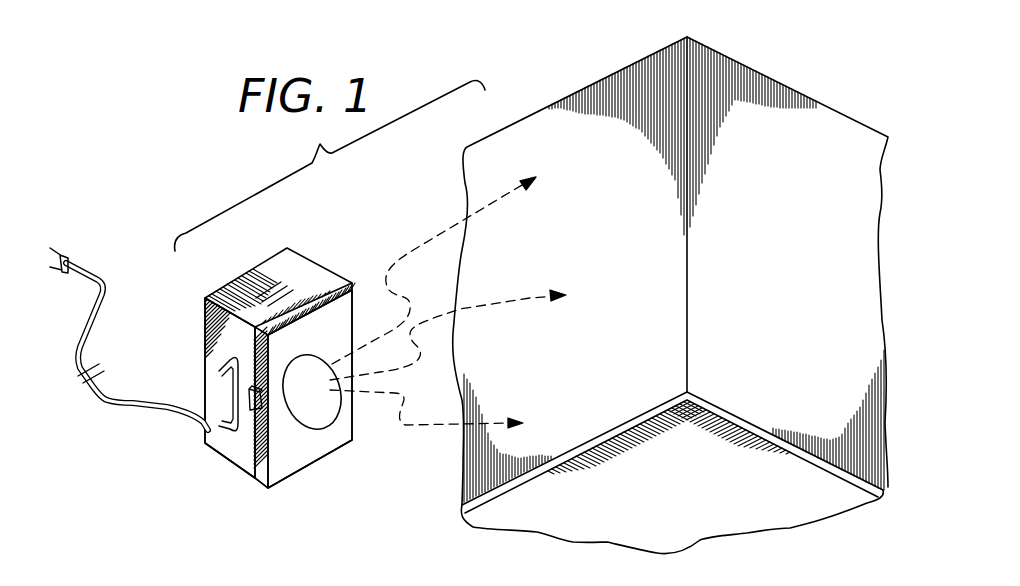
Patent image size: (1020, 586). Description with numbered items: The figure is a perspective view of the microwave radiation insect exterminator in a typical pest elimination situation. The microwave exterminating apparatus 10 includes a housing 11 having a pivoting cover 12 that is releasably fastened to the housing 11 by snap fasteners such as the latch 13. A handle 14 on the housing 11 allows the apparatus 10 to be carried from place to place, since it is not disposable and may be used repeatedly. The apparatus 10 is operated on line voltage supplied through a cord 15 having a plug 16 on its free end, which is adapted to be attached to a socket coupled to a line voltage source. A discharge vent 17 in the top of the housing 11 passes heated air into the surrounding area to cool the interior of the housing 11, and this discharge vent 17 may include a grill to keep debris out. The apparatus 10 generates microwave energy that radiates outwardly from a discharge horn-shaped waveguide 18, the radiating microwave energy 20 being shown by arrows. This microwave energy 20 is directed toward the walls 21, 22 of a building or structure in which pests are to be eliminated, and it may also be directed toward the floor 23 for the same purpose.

The microwave exterminating apparatus 10 is at (191, 334).
The housing 11 is at (240, 290).
The pivoting cover 12 is at (328, 285).
The latch 13 is at (255, 406).
The handle 14 is at (221, 426).
The cord 15 is at (100, 393).
The plug 16 is at (57, 252).
The discharge vent 17 is at (272, 280).
The discharge horn-shaped waveguide 18 is at (305, 418).
The microwave energy 20 is at (443, 432).
The wall 21 is at (530, 140).
The wall 22 is at (828, 145).
The floor 23 is at (682, 503).